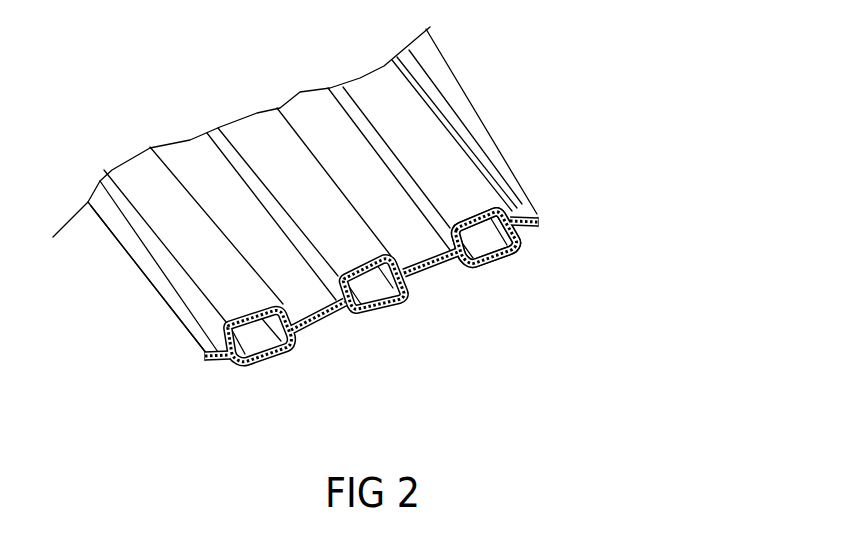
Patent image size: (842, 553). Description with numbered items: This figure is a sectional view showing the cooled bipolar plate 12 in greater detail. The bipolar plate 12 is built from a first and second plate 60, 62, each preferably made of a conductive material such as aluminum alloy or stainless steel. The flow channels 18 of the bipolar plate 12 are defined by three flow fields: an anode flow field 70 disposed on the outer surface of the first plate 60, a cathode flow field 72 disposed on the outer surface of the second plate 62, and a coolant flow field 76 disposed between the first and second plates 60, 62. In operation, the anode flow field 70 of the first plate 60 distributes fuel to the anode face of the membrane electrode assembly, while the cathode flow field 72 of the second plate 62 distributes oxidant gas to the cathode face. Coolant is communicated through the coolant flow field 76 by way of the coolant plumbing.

The bipolar plate 12 is at (372, 234).
The flow channels 18 is at (442, 145).
The first plate 60 is at (521, 205).
The second plate 62 is at (222, 366).
The anode flow field 70 is at (283, 282).
The cathode flow field 72 is at (413, 287).
The coolant flow field 76 is at (512, 251).